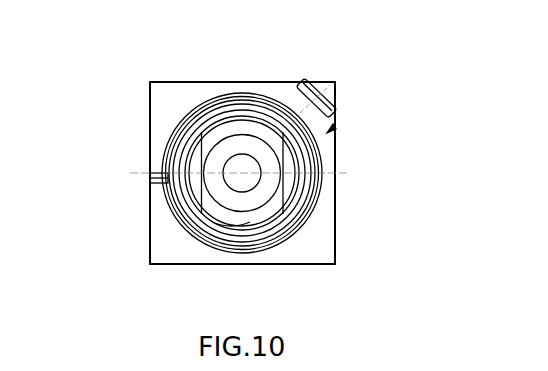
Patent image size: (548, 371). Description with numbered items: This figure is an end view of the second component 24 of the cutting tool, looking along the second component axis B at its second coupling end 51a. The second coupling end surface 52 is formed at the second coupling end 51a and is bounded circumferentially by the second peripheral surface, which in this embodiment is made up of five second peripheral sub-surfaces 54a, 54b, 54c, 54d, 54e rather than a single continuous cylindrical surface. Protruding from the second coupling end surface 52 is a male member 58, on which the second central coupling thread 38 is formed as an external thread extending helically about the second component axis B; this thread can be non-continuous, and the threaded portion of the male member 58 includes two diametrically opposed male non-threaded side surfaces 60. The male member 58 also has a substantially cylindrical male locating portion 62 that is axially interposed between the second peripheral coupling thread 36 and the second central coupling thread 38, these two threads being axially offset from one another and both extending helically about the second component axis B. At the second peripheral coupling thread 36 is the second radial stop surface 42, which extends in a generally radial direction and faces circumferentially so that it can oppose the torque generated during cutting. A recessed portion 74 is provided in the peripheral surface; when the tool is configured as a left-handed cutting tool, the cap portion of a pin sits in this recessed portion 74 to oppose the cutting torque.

The second component 24 is at (384, 46).
The second peripheral coupling thread 36 is at (320, 230).
The second central coupling thread 38 is at (315, 163).
The second radial stop surface 42 is at (150, 179).
The second coupling end 51a is at (357, 274).
The second coupling end surface 52 is at (168, 90).
The second peripheral sub-surface 54a is at (150, 253).
The second peripheral sub-surface 54b is at (198, 82).
The second peripheral sub-surface 54c is at (323, 77).
The second peripheral sub-surface 54d is at (337, 215).
The second peripheral sub-surface 54e is at (293, 265).
The male member 58 is at (330, 131).
The male non-threaded side surfaces 60 is at (187, 160).
The male locating portion 62 is at (176, 140).
The recessed portion 74 is at (332, 107).
The second component axis B is at (242, 173).